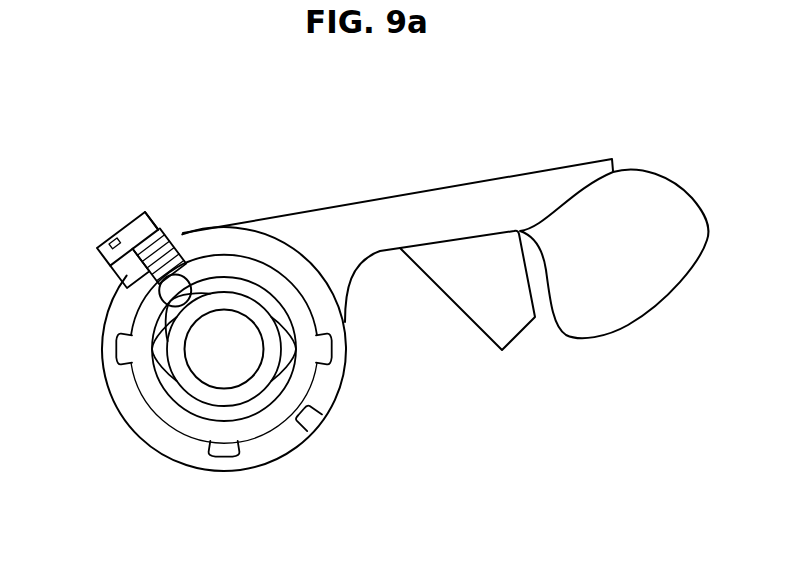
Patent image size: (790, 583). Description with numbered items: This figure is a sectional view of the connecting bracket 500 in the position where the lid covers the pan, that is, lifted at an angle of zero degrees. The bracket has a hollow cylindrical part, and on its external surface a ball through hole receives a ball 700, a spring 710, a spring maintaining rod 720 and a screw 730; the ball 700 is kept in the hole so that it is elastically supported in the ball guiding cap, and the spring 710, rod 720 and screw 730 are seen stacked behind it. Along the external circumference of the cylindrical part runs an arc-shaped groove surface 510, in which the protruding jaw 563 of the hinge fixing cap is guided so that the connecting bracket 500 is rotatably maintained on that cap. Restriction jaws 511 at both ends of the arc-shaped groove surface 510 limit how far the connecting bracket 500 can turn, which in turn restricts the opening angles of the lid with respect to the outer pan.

The connecting bracket 500 is at (427, 182).
The ball 700 is at (247, 262).
The spring 710 is at (160, 212).
The spring maintaining rod 720 is at (104, 308).
The screw 730 is at (133, 215).
The restriction jaws 511 is at (120, 368).
The arc-shaped groove surface 510 is at (320, 409).
The protruding jaw 563 is at (226, 443).